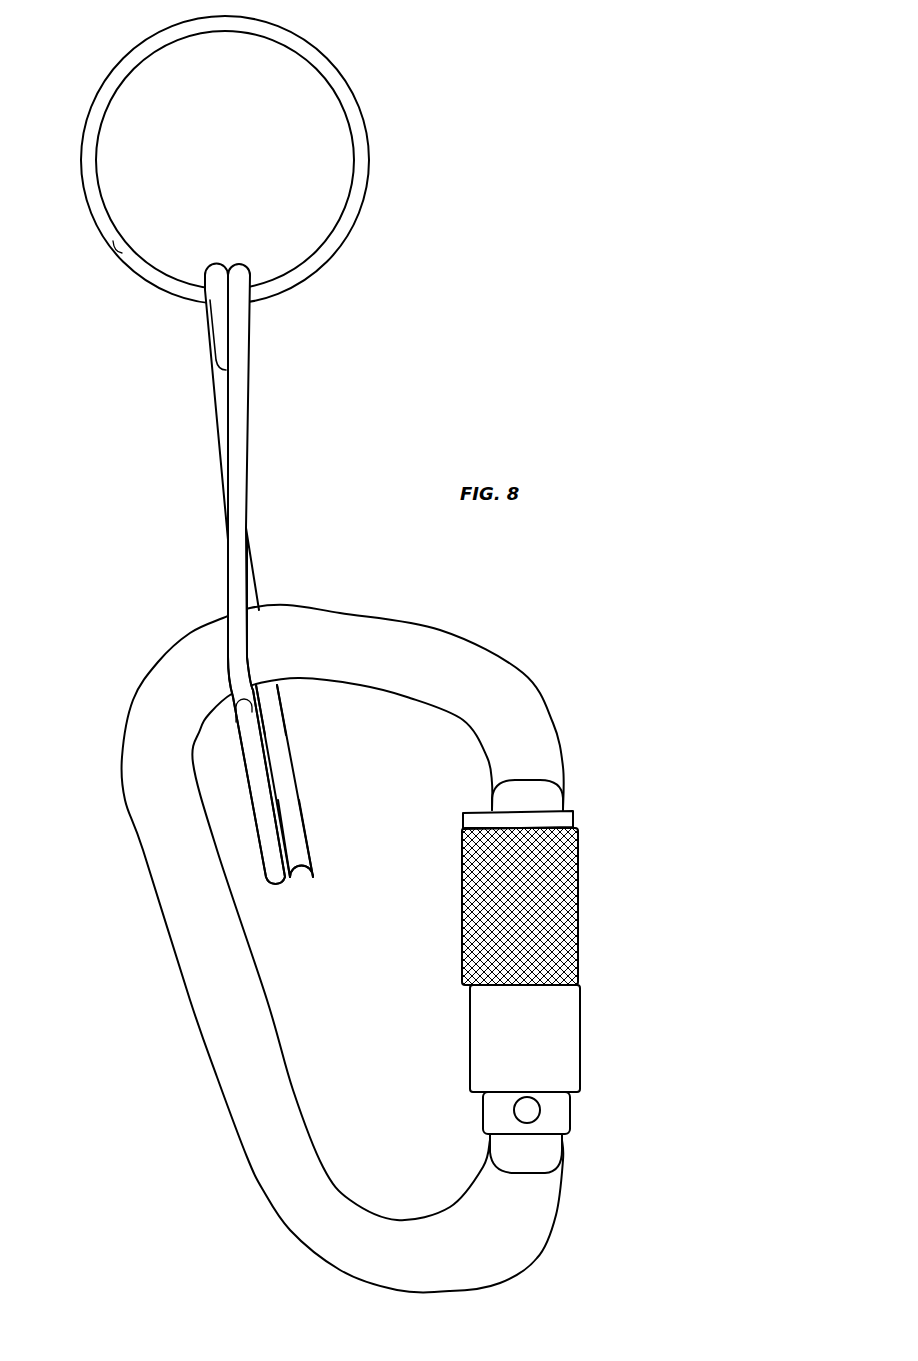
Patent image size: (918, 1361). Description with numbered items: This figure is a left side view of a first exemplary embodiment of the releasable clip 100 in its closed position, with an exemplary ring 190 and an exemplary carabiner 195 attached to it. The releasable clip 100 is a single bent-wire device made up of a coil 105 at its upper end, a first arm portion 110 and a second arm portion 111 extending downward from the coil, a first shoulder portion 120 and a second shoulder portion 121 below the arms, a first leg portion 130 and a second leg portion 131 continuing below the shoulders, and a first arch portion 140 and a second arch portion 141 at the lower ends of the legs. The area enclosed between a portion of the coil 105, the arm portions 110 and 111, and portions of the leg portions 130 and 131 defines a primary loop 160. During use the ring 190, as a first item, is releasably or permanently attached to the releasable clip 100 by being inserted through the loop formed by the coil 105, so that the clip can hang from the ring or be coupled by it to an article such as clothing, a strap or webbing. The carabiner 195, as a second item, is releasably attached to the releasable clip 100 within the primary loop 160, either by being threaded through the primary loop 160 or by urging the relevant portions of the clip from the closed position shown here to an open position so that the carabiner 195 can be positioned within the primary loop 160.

The releasable clip 100 is at (257, 574).
The coil 105 is at (212, 318).
The first arm portion 110 is at (238, 483).
The second arm portion 111 is at (215, 420).
The first shoulder portion 120 is at (237, 600).
The second shoulder portion 121 is at (253, 601).
The first leg portion 130 is at (238, 690).
The second leg portion 131 is at (267, 695).
The first arch portion 140 is at (228, 781).
The second arch portion 141 is at (293, 823).
The primary loop 160 is at (254, 567).
The ring 190 is at (353, 125).
The carabiner 195 is at (205, 1013).